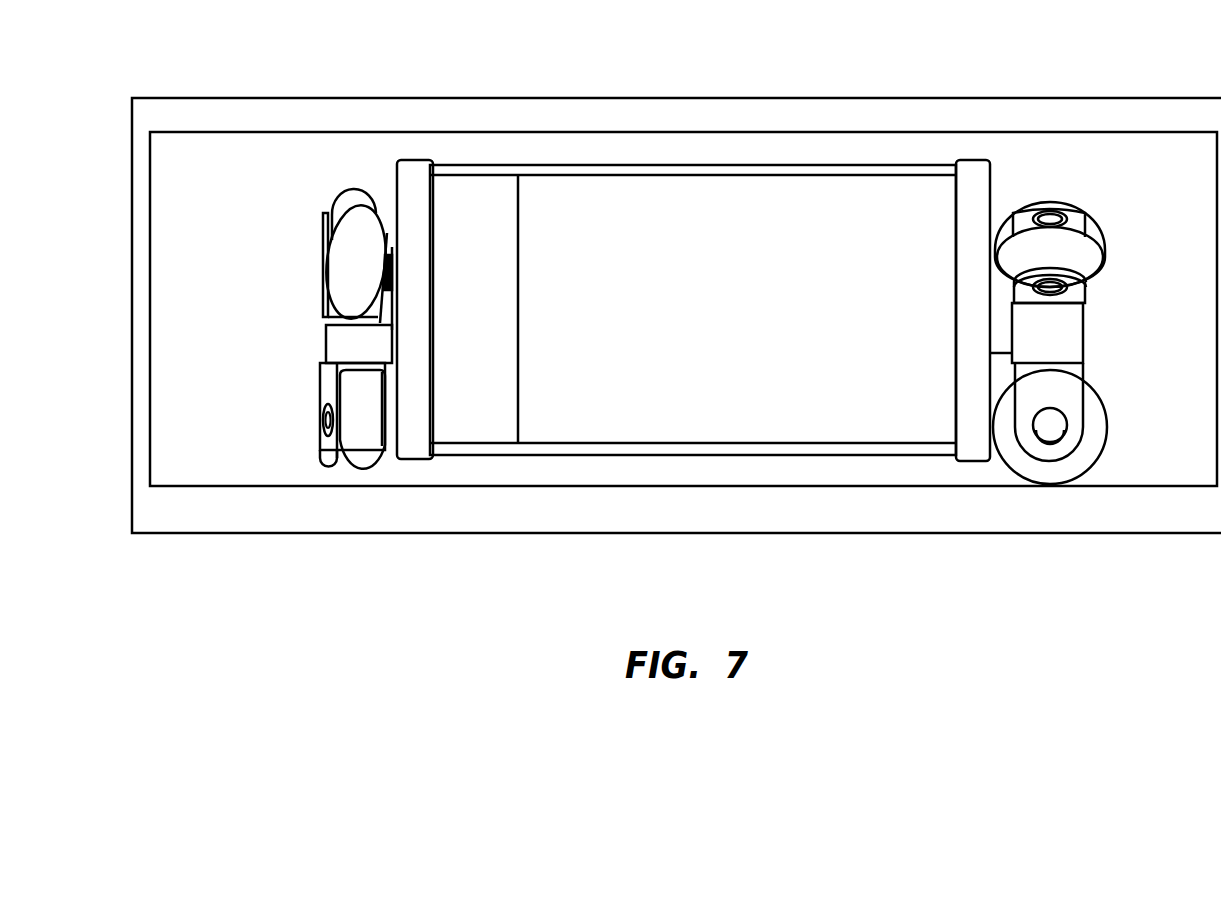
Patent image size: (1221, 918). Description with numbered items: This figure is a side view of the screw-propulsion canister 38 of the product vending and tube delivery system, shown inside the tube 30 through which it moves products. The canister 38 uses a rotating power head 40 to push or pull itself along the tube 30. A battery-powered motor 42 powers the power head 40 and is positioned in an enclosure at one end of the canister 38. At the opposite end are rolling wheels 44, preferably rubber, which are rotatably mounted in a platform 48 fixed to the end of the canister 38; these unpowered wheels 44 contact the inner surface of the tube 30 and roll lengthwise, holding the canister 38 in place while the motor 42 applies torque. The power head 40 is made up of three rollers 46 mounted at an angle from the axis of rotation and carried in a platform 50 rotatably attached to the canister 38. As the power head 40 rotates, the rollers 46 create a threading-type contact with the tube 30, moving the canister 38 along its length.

The tube 30 is at (740, 486).
The screw-propulsion canister 38 is at (623, 185).
The rotating power head 40 is at (182, 328).
The battery-powered motor 42 is at (462, 185).
The rolling wheels 44 is at (1095, 233).
The rollers 46 is at (337, 215).
The platform 48 is at (1032, 445).
The platform 50 is at (328, 443).